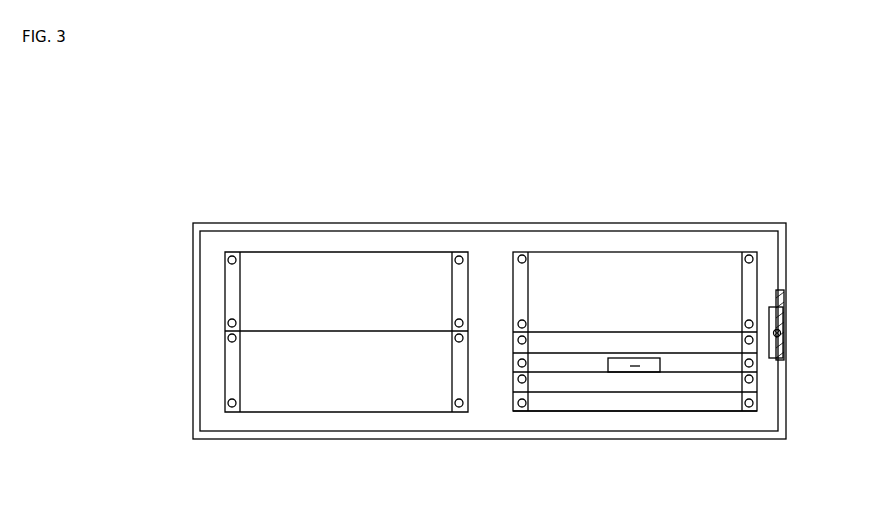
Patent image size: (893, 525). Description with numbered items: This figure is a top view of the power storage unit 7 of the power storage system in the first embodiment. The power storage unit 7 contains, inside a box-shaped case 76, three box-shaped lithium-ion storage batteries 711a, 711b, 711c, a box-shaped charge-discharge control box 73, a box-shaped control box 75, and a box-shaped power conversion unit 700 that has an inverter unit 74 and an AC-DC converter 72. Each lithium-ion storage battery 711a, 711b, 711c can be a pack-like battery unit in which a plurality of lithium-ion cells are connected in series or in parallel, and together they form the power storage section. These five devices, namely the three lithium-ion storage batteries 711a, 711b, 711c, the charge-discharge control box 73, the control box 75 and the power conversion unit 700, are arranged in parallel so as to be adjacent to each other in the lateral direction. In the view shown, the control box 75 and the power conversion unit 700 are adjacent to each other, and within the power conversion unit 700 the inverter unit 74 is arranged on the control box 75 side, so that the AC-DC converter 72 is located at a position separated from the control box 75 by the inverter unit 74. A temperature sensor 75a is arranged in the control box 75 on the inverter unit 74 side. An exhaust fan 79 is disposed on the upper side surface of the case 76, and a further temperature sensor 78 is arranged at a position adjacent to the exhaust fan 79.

The power storage unit 7 is at (524, 198).
The case 76 is at (678, 223).
The lithium-ion storage battery 711a is at (260, 297).
The lithium-ion storage battery 711b is at (260, 373).
The lithium-ion storage battery 711c is at (728, 277).
The power conversion unit 700 is at (831, 382).
The AC-DC converter 72 is at (733, 405).
The charge-discharge control box 73 is at (723, 338).
The inverter unit 74 is at (735, 380).
The control box 75 is at (735, 363).
The temperature sensor 75a is at (635, 366).
The temperature sensor 78 is at (780, 302).
The exhaust fan 79 is at (782, 346).